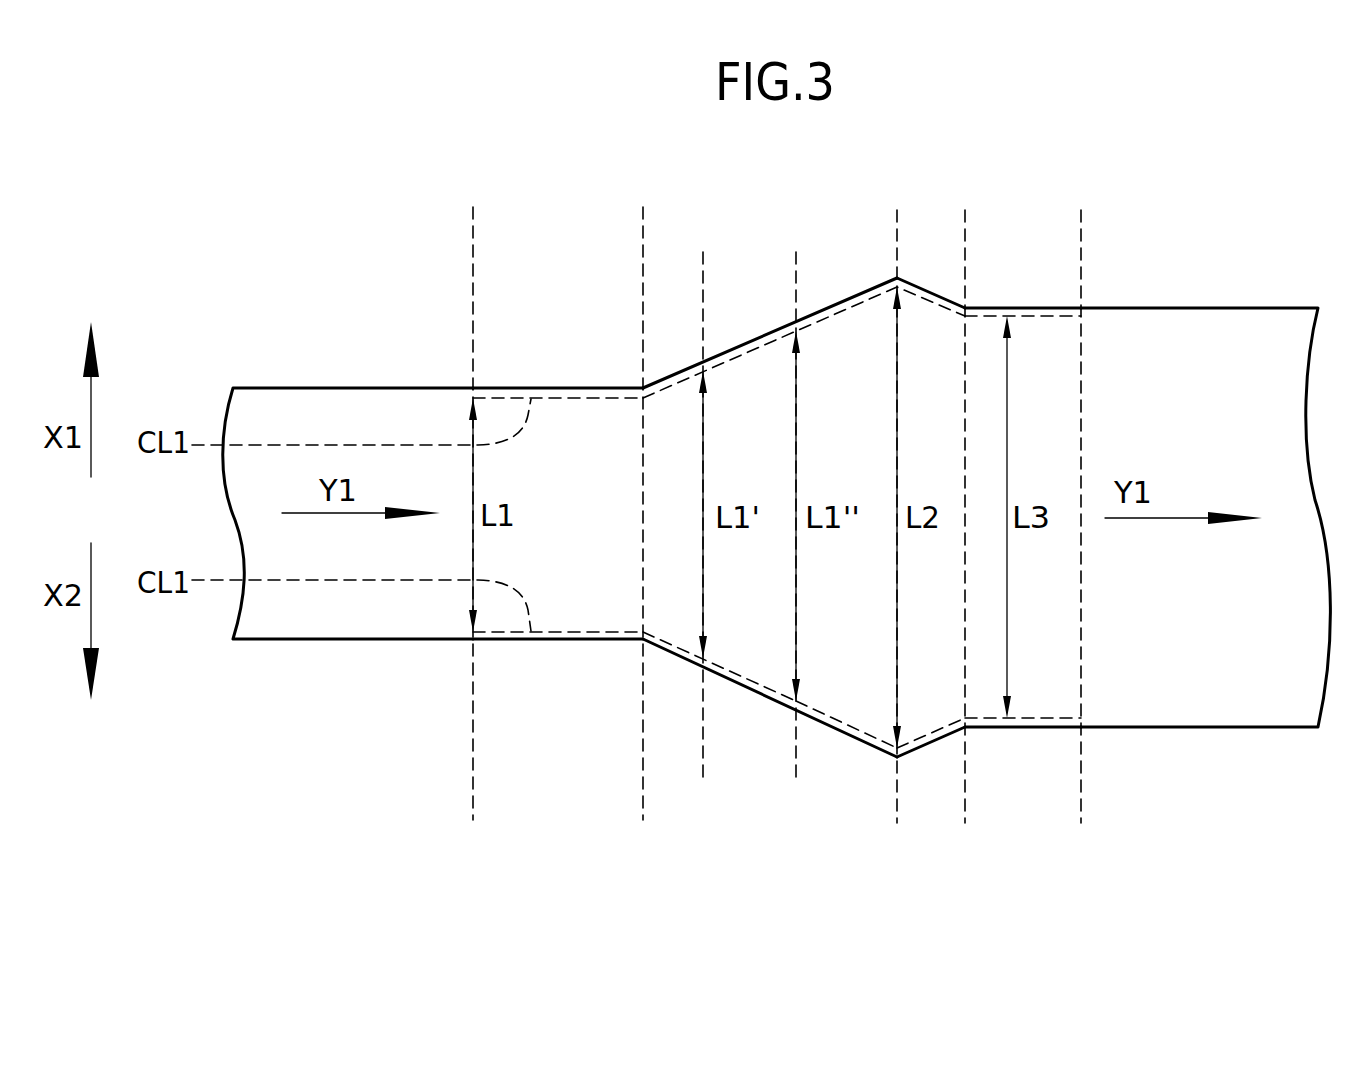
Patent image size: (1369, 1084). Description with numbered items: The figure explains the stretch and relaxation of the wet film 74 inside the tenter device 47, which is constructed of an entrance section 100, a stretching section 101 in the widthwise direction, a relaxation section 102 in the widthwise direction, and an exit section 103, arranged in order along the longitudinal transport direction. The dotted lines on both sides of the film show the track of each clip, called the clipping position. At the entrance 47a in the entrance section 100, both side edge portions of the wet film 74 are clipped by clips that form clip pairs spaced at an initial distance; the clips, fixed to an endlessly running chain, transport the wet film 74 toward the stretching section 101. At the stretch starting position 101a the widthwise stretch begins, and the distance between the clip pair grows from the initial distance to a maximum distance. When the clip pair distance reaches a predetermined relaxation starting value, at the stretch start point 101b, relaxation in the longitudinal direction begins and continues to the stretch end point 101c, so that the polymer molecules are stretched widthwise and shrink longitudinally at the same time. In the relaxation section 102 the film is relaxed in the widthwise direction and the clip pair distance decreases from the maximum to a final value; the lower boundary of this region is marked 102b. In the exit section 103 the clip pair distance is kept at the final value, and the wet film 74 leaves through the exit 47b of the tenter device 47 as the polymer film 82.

The tenter device 47 is at (473, 853).
The entrance 47a is at (473, 662).
The exit 47b is at (1081, 393).
The wet film 74 is at (430, 600).
The polymer film 82 is at (1190, 678).
The entrance section 100 is at (473, 270).
The stretching section 101 is at (643, 223).
The stretch starting position 101a is at (643, 352).
The stretch start point 101b is at (703, 723).
The stretch end point 101c is at (796, 727).
The relaxation section 102 is at (965, 259).
The lower wall of contracting section 102b is at (966, 677).
The exit section 103 is at (1081, 233).